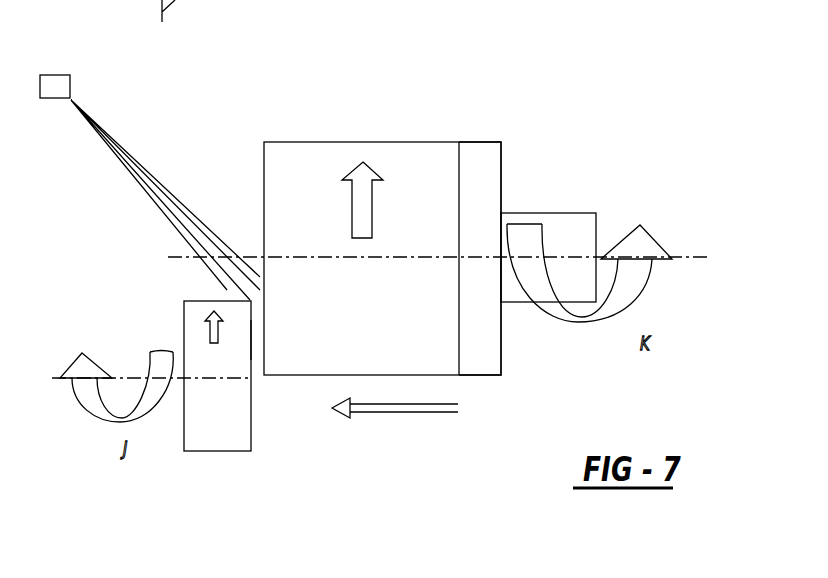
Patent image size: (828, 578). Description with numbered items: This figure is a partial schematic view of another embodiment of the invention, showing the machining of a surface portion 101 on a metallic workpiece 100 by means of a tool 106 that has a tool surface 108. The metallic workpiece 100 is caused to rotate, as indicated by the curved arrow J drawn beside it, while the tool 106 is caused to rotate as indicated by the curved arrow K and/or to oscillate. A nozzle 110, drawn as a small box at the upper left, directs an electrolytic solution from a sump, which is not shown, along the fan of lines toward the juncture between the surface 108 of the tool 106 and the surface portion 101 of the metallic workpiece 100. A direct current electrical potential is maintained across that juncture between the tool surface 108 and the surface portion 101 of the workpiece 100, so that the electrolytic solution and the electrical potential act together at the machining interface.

The metallic workpiece 100 is at (218, 452).
The surface portion 101 is at (252, 340).
The tool 106 is at (420, 142).
The tool surface 108 is at (264, 192).
The nozzle 110 is at (52, 75).